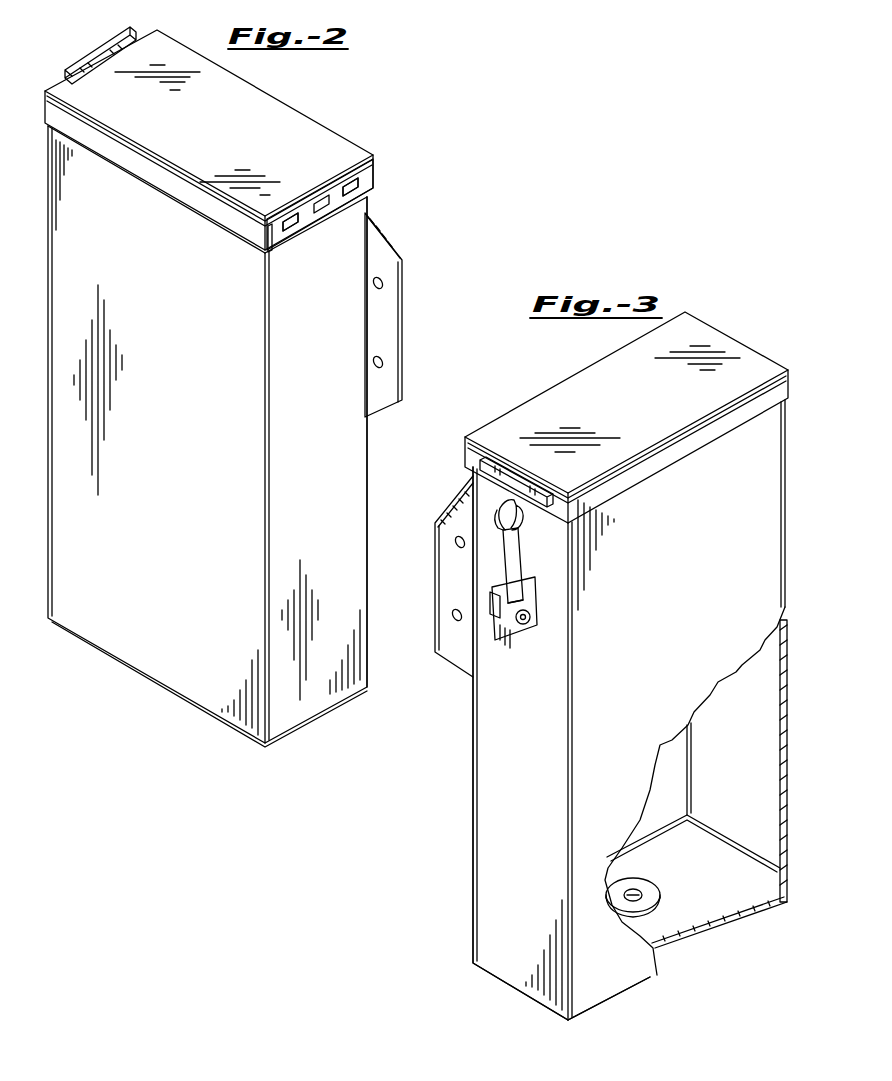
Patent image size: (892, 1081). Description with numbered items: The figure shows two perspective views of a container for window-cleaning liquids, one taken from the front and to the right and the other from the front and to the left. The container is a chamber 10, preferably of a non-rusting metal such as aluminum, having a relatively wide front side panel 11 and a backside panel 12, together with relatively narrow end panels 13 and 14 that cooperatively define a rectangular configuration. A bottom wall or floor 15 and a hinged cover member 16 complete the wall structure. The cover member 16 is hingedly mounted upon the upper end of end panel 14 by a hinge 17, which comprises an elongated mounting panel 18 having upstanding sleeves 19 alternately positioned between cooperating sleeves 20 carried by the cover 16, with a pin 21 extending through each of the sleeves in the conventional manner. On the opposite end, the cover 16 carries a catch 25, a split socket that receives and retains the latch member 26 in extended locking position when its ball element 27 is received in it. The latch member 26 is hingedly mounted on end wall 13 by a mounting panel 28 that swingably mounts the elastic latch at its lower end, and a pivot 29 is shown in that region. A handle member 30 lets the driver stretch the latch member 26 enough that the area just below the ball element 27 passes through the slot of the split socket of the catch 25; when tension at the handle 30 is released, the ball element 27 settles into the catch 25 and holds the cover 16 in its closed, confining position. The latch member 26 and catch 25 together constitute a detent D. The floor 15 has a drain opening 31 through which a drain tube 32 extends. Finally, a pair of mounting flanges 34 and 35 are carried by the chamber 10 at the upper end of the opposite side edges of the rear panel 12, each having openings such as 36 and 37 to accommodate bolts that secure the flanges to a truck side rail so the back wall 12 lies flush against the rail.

In FIG. 2, the chamber 10 is at (350, 95).
In FIG. 3, the chamber 10 is at (688, 300).
In FIG. 2, the front side panel 11 is at (163, 660).
In FIG. 3, the front side panel 11 is at (772, 478).
In FIG. 3, the backside panel 12 is at (669, 797).
In FIG. 3, the end panel 13 is at (482, 853).
In FIG. 2, the end panel 14 is at (360, 455).
In FIG. 3, the end panel 14 is at (760, 688).
In FIG. 3, the bottom wall or floor 15 is at (702, 890).
In FIG. 2, the hinged cover member 16 is at (366, 150).
In FIG. 3, the hinged cover member 16 is at (722, 332).
In FIG. 2, the hinge 17 is at (378, 200).
In FIG. 2, the elongated mounting panel 18 is at (307, 228).
In FIG. 2, the upstanding sleeves 19 is at (272, 215).
In FIG. 2, the cooperating sleeves 20 is at (351, 175).
In FIG. 2, the pin 21 is at (262, 228).
In FIG. 3, the catch 25 is at (497, 518).
In FIG. 3, the latch member 26 is at (498, 553).
In FIG. 3, the ball element 27 is at (524, 510).
In FIG. 3, the mounting panel 28 is at (538, 627).
In FIG. 3, the latch pivot 29 is at (528, 637).
In FIG. 2, the handle member 30 is at (98, 50).
In FIG. 3, the handle member 30 is at (511, 462).
In FIG. 3, the drain opening 31 is at (633, 892).
In FIG. 3, the drain tube 32 is at (662, 878).
In FIG. 3, the mounting flange 34 is at (433, 573).
In FIG. 2, the mounting flange 35 is at (385, 322).
In FIG. 2, the opening 36 is at (385, 360).
In FIG. 3, the opening 36 is at (457, 625).
In FIG. 2, the opening 37 is at (383, 284).
In FIG. 3, the opening 37 is at (456, 536).
In FIG. 3, the detent D is at (532, 556).